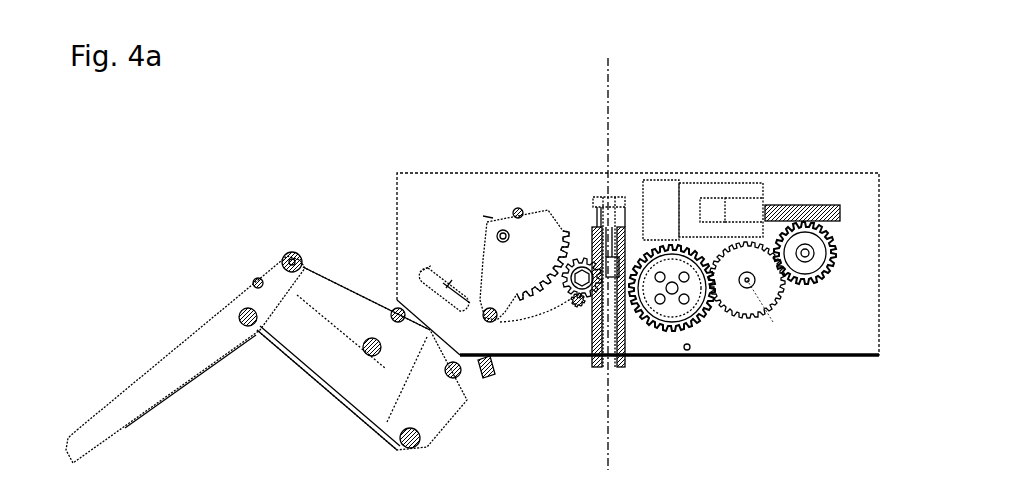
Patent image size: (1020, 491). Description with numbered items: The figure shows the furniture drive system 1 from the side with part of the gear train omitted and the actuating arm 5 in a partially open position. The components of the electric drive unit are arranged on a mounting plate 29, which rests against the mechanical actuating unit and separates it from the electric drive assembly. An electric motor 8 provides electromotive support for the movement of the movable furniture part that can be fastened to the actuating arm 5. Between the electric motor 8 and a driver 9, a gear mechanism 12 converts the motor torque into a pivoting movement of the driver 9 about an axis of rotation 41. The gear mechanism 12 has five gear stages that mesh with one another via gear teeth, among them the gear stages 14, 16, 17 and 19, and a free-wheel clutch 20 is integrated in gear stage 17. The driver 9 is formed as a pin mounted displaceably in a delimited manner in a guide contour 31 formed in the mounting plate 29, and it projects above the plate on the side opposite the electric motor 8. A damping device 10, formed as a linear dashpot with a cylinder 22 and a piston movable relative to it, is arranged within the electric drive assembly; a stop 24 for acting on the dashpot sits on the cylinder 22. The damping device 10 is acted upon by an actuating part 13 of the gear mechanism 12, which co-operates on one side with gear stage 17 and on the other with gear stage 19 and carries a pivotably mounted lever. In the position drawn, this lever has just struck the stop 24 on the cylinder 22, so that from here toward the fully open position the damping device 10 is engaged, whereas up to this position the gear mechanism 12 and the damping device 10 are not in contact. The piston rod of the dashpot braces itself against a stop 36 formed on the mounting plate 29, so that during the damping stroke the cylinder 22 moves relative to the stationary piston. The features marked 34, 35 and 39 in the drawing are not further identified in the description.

The furniture drive system 1 is at (305, 121).
The actuating arm 5 is at (185, 356).
The electric motor 8 is at (718, 185).
The driver 9 is at (480, 270).
The damping device 10 is at (627, 367).
The gear mechanism 12 is at (753, 347).
The actuating part 13 is at (578, 318).
The gear stage 14 is at (827, 294).
The gear stage 16 is at (627, 210).
The gear stage 17 is at (687, 350).
The gear stage 19 is at (518, 210).
The free-wheel clutch 20 is at (705, 345).
The cylinder 22 is at (604, 355).
The stop 24 is at (599, 215).
The mounting plate 29 is at (404, 196).
The guide contour 31 is at (427, 270).
The lever 34 is at (523, 247).
The sector gear 35 is at (493, 345).
The stop 36 is at (611, 230).
The section line 39 is at (612, 68).
The axis of rotation 41 is at (493, 215).